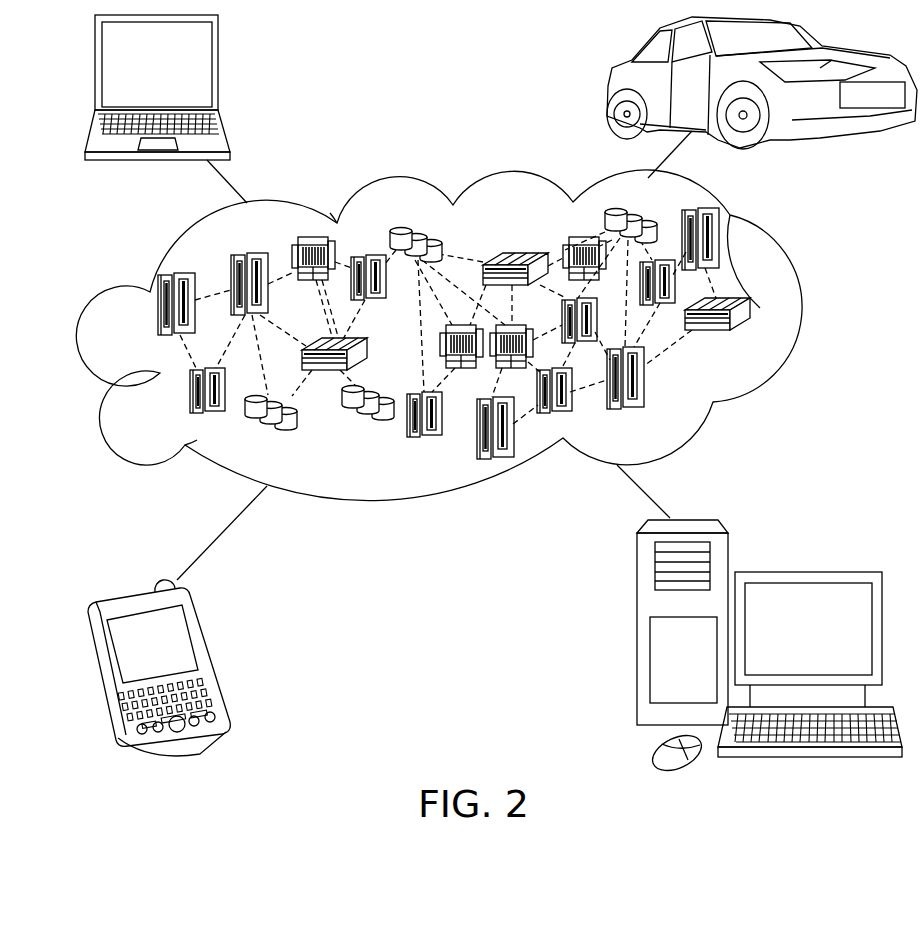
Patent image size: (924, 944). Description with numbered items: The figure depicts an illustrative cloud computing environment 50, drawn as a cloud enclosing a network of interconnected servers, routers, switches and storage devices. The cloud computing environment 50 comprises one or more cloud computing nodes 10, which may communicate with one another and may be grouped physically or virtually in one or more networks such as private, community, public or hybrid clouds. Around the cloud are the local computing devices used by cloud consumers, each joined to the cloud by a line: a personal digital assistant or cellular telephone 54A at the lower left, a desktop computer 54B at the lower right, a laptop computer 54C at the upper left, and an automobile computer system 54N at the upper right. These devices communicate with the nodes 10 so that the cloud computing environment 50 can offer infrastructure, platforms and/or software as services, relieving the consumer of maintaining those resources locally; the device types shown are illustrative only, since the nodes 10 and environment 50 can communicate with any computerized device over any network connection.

The cloud computing node 10 is at (762, 342).
The cloud computing environment 50 is at (805, 313).
The personal digital assistant or cellular telephone 54A is at (212, 657).
The desktop computer 54B is at (805, 572).
The laptop computer 54C is at (218, 69).
The automobile computer system 54N is at (608, 83).